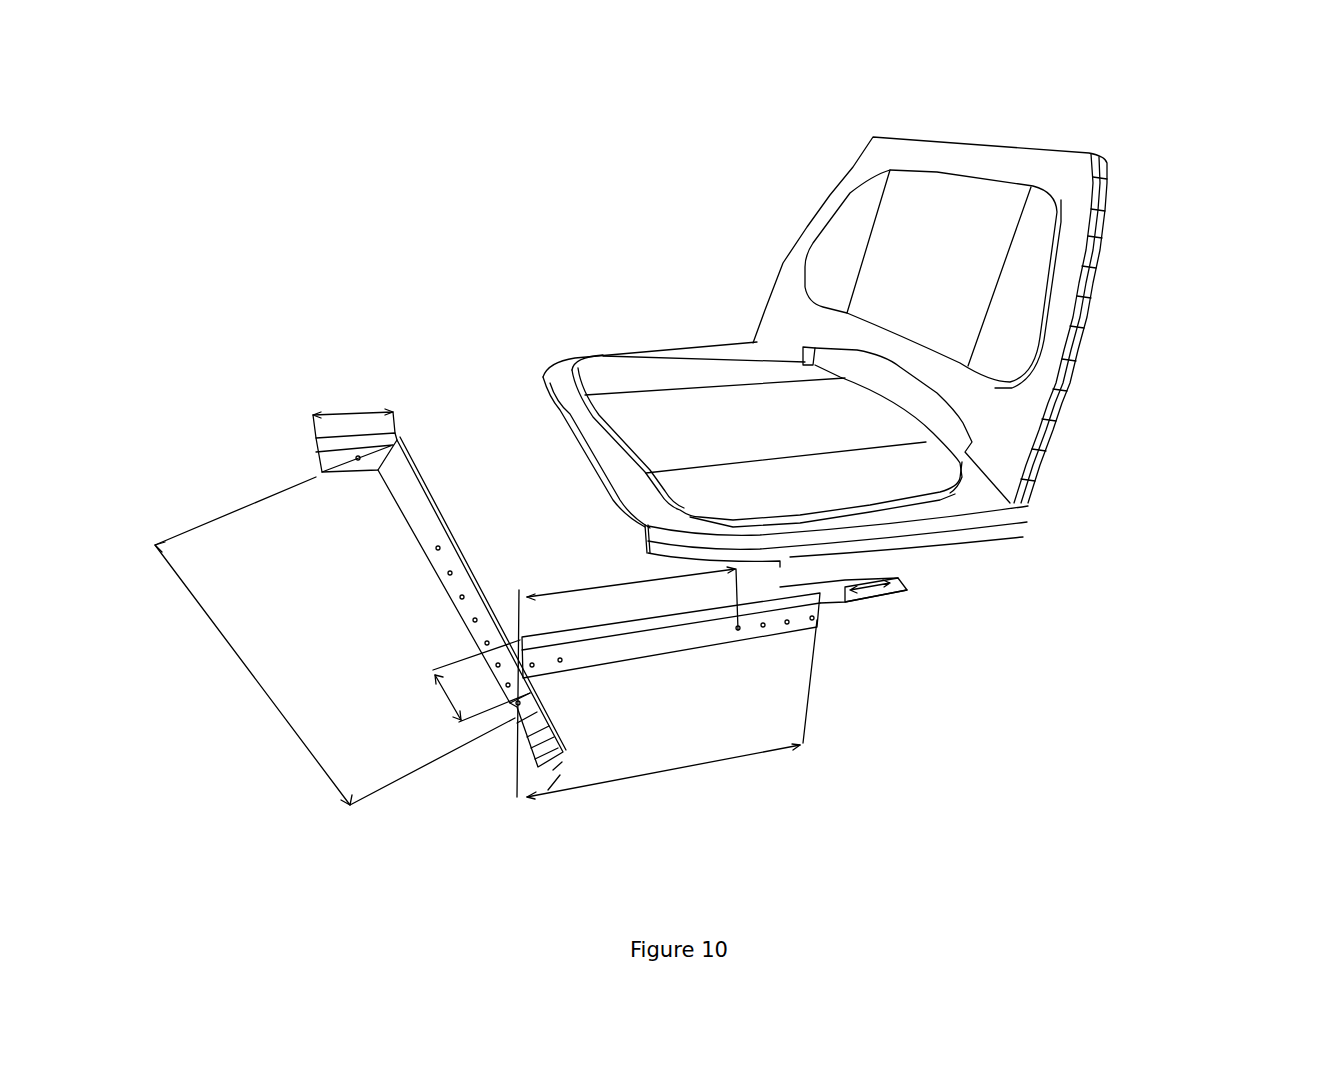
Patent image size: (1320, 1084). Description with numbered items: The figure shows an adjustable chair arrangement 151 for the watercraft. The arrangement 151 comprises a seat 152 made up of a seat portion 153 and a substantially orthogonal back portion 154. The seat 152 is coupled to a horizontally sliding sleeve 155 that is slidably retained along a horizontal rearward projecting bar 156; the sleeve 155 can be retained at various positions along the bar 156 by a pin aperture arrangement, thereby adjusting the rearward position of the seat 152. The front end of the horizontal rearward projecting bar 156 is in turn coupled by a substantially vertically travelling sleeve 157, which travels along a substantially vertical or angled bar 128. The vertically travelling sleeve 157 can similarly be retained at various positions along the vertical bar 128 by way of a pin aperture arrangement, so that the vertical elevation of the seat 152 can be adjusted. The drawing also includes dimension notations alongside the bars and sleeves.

The adjustable chair arrangement 151 is at (1174, 76).
The seat 152 is at (1043, 609).
The seat portion 153 is at (625, 362).
The back portion 154 is at (826, 209).
The horizontally sliding sleeve 155 is at (643, 648).
The horizontal rearward projecting bar 156 is at (782, 630).
The vertically travelling sleeve 157 is at (495, 655).
The vertical support bar 128 is at (420, 525).